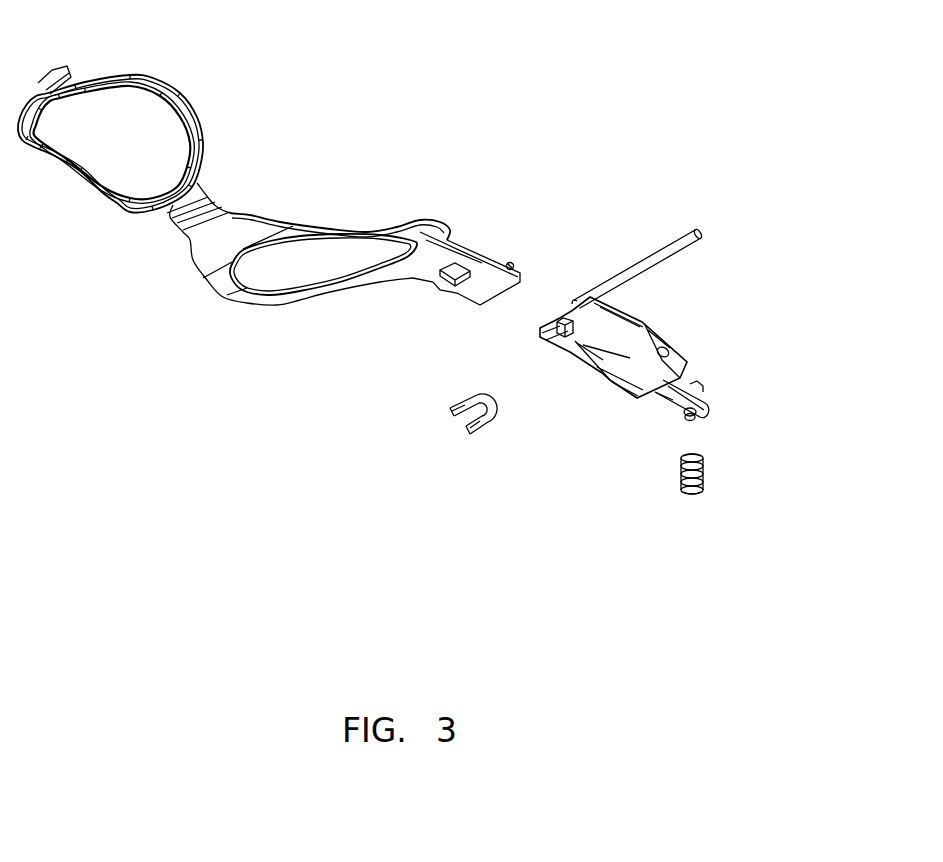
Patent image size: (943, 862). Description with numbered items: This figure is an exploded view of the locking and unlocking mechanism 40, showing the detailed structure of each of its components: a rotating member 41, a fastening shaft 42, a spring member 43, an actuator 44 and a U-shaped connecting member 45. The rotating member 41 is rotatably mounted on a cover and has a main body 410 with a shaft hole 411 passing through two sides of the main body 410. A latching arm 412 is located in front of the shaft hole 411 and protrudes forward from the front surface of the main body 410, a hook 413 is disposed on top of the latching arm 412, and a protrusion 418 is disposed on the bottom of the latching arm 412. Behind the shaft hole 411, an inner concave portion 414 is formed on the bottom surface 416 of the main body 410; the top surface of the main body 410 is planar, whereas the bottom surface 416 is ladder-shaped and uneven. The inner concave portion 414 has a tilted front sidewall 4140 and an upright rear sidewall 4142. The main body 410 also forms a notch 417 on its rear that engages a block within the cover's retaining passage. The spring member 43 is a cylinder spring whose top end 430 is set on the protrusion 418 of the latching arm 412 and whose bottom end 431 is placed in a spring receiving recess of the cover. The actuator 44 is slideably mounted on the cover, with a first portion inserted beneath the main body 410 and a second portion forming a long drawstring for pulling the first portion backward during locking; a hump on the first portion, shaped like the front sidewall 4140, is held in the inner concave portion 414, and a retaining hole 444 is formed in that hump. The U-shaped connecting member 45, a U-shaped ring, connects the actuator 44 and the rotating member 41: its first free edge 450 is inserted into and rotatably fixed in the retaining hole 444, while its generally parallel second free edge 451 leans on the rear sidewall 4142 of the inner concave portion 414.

The locking and unlocking mechanism 40 is at (415, 46).
The actuator 44 is at (435, 218).
The retaining hole 444 is at (512, 262).
The fastening shaft 42 is at (666, 246).
The rotating member 41 is at (657, 327).
The notch 417 is at (560, 316).
The upright rear sidewall 4142 is at (615, 316).
The main body 410 is at (668, 335).
The shaft hole 411 is at (670, 350).
The hook 413 is at (692, 390).
The protrusion 418 is at (688, 420).
The inner concave portion 414 is at (590, 354).
The tilted front sidewall 4140 is at (612, 364).
The bottom surface 416 is at (630, 390).
The latching arm 412 is at (668, 402).
The spring member 43 is at (710, 463).
The top end 430 is at (703, 448).
The bottom end 431 is at (698, 488).
The U-shaped connecting member 45 is at (473, 393).
The second free edge 451 is at (452, 407).
The first free edge 450 is at (468, 436).